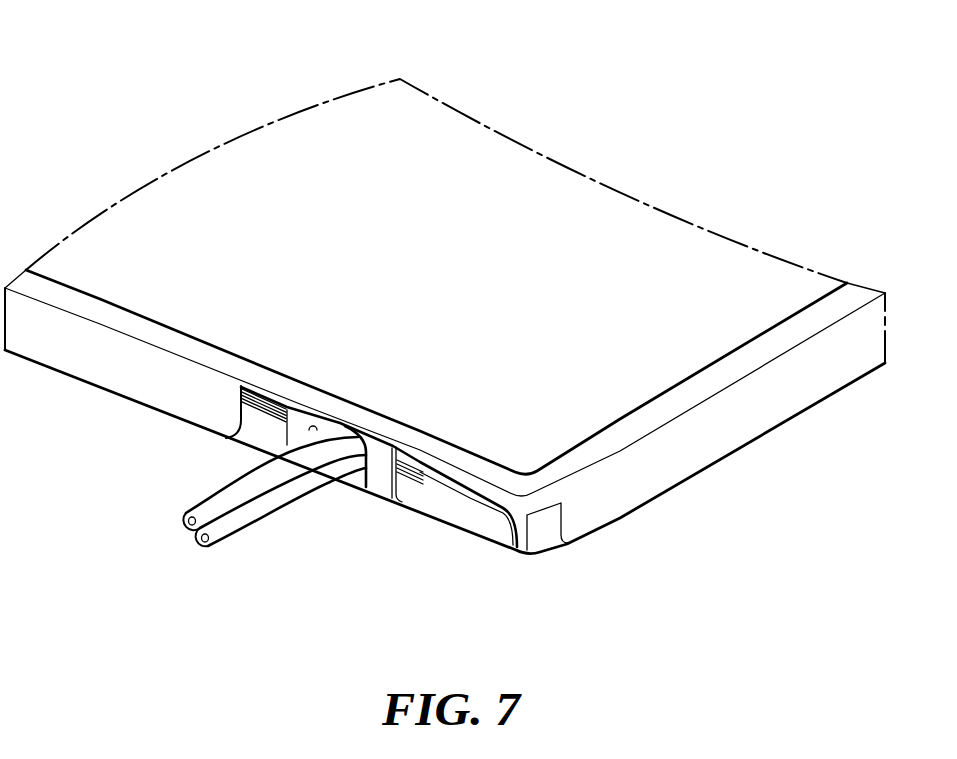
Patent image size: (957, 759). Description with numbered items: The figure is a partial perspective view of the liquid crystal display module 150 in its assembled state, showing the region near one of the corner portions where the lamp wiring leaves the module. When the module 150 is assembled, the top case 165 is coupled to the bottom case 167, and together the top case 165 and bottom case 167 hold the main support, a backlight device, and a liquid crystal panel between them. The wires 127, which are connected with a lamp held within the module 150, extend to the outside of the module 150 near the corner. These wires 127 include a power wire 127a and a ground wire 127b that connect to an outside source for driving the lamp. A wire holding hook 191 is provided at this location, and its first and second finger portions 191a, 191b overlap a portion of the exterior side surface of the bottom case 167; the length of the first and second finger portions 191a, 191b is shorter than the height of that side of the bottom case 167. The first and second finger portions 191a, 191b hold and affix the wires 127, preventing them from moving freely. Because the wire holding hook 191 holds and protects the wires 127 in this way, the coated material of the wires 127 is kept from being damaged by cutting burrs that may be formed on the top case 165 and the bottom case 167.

The liquid crystal display module 150 is at (745, 86).
The top case 165 is at (377, 427).
The bottom case 167 is at (474, 520).
The wire holding hook 191 is at (357, 510).
The first finger portion 191a is at (305, 433).
The second finger portion 191b is at (384, 473).
The wires 127 is at (264, 546).
The power wire 127a is at (191, 538).
The ground wire 127b is at (216, 542).